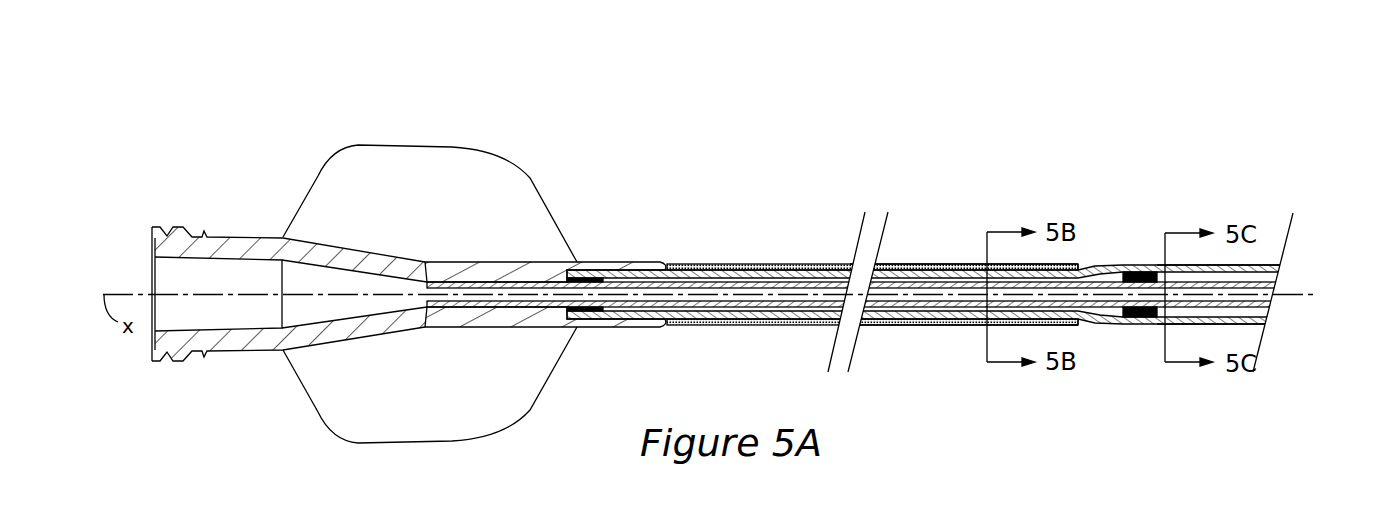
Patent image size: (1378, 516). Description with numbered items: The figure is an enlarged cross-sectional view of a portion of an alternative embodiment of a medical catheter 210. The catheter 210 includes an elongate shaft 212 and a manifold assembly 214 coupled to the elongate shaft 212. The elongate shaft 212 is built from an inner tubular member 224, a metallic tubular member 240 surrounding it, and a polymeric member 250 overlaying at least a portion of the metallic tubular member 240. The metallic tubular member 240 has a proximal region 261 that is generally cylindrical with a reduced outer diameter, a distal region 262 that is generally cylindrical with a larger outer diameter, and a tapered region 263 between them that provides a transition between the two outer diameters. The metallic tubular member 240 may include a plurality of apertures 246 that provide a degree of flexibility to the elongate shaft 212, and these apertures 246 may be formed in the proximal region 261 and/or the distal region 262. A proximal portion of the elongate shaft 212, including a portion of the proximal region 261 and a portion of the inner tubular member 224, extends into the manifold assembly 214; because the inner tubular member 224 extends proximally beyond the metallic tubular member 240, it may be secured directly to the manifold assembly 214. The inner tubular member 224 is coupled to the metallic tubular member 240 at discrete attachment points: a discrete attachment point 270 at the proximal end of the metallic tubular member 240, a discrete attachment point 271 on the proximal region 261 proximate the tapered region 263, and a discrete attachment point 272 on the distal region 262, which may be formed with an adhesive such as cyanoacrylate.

The catheter 210 is at (1170, 160).
The elongate shaft 212 is at (753, 222).
The manifold assembly 214 is at (527, 155).
The inner tubular member 224 is at (785, 290).
The metallic tubular member 240 is at (782, 318).
The apertures 246 is at (1153, 328).
The polymeric member 250 is at (700, 328).
The proximal region 261 is at (913, 252).
The distal region 262 is at (1270, 230).
The tapered region 263 is at (1088, 255).
The discrete attachment point 270 is at (585, 278).
The discrete attachment point 271 is at (1078, 328).
The discrete attachment point 272 is at (1148, 270).